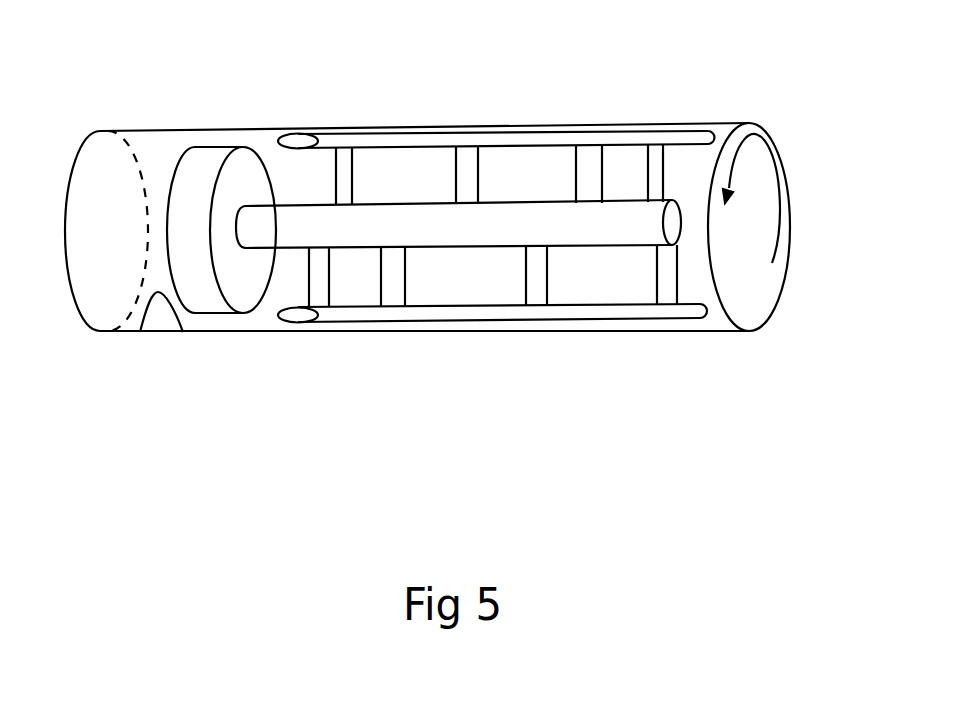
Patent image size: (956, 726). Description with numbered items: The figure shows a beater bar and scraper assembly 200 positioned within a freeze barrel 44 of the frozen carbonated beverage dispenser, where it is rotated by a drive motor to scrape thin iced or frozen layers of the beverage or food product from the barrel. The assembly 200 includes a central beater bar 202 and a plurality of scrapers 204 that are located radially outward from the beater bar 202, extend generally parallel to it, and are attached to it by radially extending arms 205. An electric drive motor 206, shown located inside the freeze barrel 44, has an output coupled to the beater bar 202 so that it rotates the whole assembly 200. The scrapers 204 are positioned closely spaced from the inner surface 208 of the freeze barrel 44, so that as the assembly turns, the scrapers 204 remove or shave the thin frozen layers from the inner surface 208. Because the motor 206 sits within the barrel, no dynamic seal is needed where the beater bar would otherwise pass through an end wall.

The freeze barrel 44 is at (728, 120).
The beater bar and scraper assembly 200 is at (475, 247).
The beater bar 202 is at (488, 222).
The scrapers 204 is at (397, 140).
The arms 205 is at (338, 167).
The electric drive motor 206 is at (212, 170).
The inner surface 208 is at (136, 298).